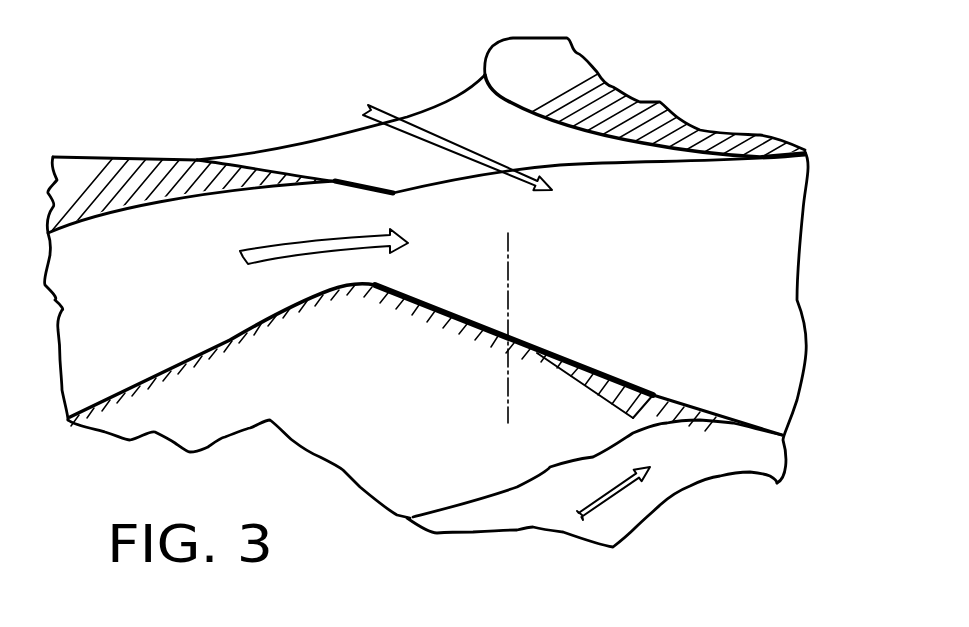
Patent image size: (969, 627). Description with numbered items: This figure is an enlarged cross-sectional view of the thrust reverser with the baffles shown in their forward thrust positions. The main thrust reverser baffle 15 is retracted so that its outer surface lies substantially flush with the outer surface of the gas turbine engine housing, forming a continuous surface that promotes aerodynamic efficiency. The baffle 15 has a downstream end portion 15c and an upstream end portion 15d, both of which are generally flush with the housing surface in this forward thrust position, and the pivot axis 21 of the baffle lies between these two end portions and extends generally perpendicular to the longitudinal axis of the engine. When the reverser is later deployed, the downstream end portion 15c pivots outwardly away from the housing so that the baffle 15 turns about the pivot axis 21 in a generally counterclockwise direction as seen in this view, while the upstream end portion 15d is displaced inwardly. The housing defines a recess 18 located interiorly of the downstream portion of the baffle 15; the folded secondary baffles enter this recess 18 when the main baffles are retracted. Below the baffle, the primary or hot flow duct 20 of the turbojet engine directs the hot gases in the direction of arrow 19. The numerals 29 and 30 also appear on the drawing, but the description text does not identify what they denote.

The thrust reverser baffle 15 is at (523, 252).
The downstream end portion 15c is at (622, 379).
The upstream end portion 15d is at (506, 337).
The recess 18 is at (611, 394).
The arrow 19 is at (593, 498).
The primary hot flow duct 20 is at (594, 483).
The pivot axis 21 is at (509, 342).
The ridge 29 is at (455, 320).
The trailing edge portion 30 is at (668, 397).